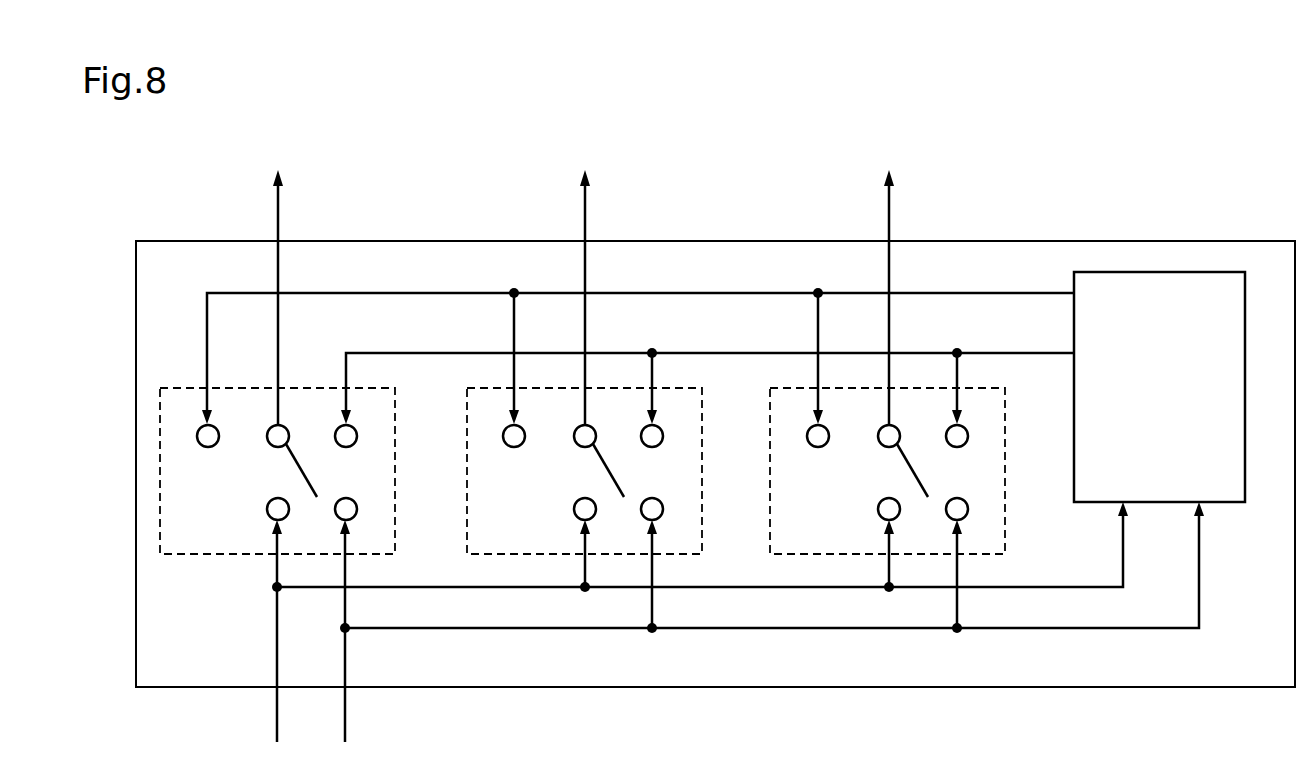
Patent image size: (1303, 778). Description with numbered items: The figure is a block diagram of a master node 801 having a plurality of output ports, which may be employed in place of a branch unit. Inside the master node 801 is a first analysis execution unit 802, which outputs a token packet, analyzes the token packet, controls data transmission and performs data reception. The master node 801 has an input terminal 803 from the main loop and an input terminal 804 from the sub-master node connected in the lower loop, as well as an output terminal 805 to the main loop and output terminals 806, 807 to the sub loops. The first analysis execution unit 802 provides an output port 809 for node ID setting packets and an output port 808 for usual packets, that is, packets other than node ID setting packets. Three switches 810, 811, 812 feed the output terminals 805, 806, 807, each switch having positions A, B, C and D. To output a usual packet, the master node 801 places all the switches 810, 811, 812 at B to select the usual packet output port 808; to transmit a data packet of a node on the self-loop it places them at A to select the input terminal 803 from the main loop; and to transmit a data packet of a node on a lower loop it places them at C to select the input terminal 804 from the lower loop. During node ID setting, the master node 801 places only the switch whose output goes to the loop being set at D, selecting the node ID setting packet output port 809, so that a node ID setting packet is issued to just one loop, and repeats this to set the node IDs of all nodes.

The master node 801 is at (1086, 241).
The first analysis execution unit 802 is at (1200, 272).
The input terminal from the main loop 803 is at (347, 724).
The input terminal from the sub-master node 804 is at (276, 727).
The output terminal to the main loop 805 is at (276, 215).
The output terminal to the sub loop 806 is at (583, 215).
The output terminal to the sub loop 807 is at (887, 215).
The usual packet output port 808 is at (681, 353).
The node ID setting packet output port 809 is at (932, 293).
The switch 810 is at (206, 553).
The switch 811 is at (520, 555).
The switch 812 is at (812, 555).